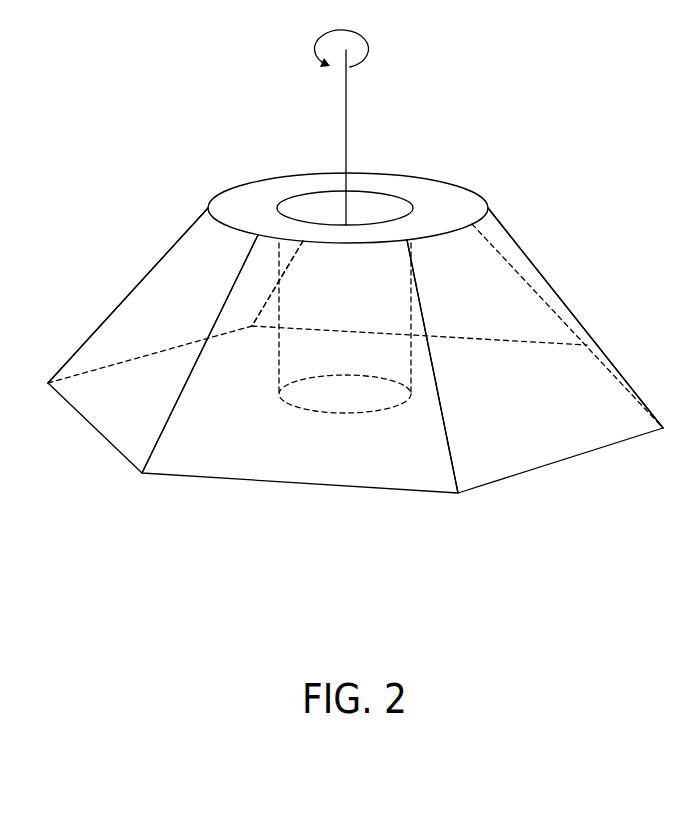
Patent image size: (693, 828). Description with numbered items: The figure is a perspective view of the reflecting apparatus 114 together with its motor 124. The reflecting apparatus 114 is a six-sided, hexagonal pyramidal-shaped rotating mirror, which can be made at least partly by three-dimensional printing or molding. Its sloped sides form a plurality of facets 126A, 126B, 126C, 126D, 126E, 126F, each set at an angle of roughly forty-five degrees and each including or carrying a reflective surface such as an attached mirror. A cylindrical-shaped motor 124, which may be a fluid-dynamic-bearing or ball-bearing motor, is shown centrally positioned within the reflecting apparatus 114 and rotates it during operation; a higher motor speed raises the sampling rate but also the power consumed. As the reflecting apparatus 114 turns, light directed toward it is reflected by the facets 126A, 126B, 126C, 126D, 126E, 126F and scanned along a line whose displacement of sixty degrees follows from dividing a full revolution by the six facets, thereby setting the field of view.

The reflecting apparatus 114 is at (130, 129).
The motor 124 is at (350, 145).
The facet 126A is at (527, 465).
The facet 126B is at (328, 478).
The facet 126C is at (112, 430).
The facet 126D is at (134, 292).
The facet 126E is at (257, 305).
The facet 126F is at (594, 345).